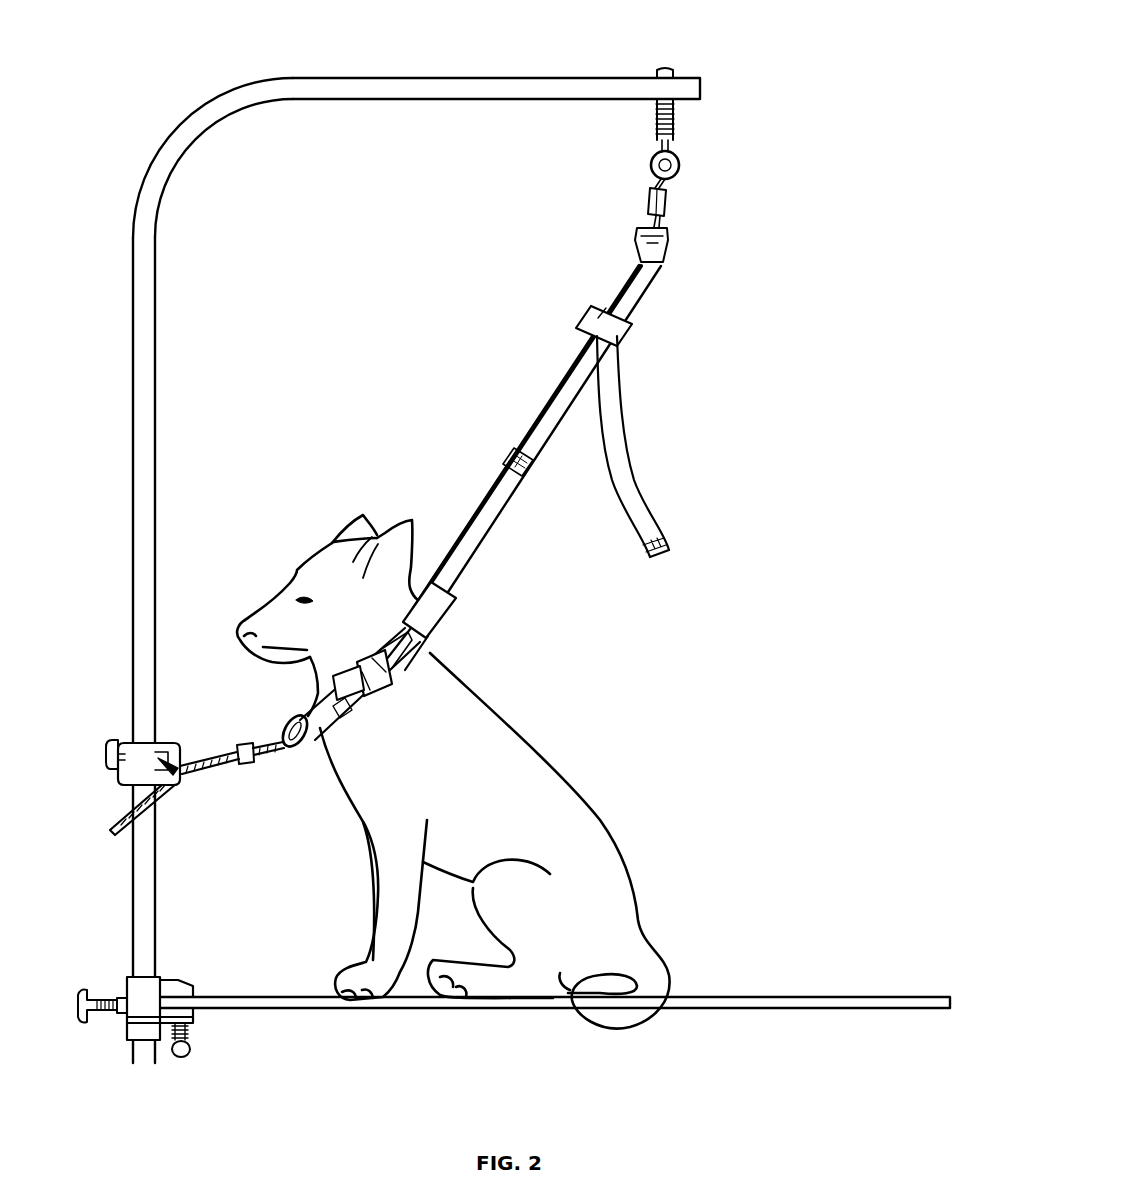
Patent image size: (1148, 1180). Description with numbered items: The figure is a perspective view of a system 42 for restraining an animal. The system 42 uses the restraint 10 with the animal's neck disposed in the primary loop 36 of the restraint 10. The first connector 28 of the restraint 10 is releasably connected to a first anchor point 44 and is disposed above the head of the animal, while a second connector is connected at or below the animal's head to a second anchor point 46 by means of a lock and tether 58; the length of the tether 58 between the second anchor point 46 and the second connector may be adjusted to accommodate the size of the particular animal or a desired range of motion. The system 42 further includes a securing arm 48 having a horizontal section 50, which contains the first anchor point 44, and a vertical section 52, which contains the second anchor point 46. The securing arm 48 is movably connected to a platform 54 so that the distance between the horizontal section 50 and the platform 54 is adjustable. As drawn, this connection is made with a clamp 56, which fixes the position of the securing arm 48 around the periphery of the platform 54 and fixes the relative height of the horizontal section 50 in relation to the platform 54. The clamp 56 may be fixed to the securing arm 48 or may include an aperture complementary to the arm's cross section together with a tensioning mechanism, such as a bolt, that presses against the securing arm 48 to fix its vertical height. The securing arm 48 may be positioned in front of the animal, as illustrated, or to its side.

The restraint 10 is at (565, 621).
The first connector 28 is at (667, 203).
The primary loop 36 is at (418, 682).
The system 42 is at (781, 180).
The first anchor point 44 is at (673, 148).
The second anchor point 46 is at (175, 775).
The securing arm 48 is at (185, 138).
The horizontal section 50 is at (467, 90).
The vertical section 52 is at (148, 462).
The platform 54 is at (773, 1000).
The clamp 56 is at (140, 1033).
The tether 58 is at (195, 738).